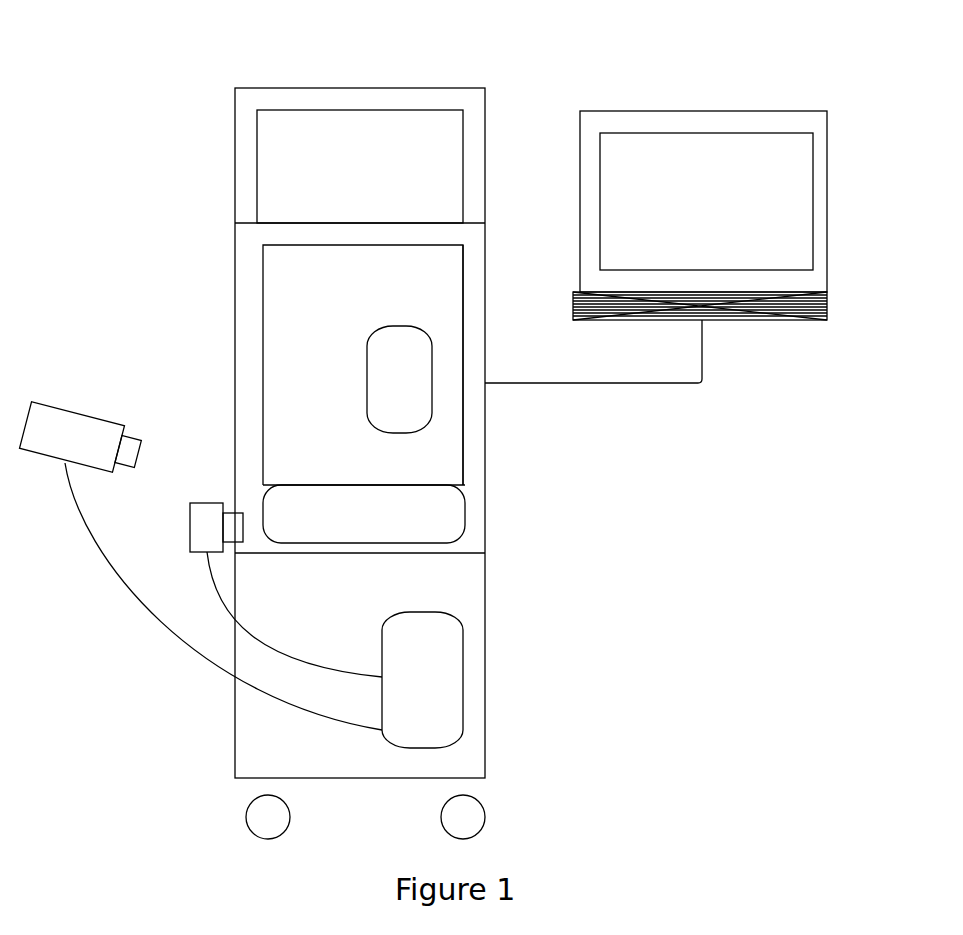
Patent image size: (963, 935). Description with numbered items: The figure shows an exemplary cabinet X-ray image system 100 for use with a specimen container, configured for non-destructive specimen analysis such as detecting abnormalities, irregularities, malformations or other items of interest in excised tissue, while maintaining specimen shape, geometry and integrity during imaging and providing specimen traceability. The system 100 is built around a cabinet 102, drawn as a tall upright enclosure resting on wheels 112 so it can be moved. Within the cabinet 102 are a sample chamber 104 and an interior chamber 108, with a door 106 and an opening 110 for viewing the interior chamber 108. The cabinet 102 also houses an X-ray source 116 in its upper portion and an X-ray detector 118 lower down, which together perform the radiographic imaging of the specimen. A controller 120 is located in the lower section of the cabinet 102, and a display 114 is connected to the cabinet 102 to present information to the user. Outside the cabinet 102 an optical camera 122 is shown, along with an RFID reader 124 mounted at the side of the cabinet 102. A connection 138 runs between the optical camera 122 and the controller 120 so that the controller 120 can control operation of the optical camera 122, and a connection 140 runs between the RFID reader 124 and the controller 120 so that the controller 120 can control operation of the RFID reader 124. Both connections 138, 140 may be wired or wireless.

The cabinet X-ray image system 100 is at (245, 64).
The cabinet 102 is at (255, 407).
The sample chamber 104 is at (310, 487).
The door 106 is at (438, 453).
The interior chamber 108 is at (297, 303).
The opening 110 is at (418, 348).
The wheels 112 is at (465, 820).
The display 114 is at (788, 207).
The X-ray source 116 is at (308, 175).
The X-ray detector 118 is at (430, 515).
The controller 120 is at (447, 693).
The optical camera 122 is at (82, 440).
The RFID reader 124 is at (190, 525).
The connection 138 is at (140, 648).
The connection 140 is at (208, 592).